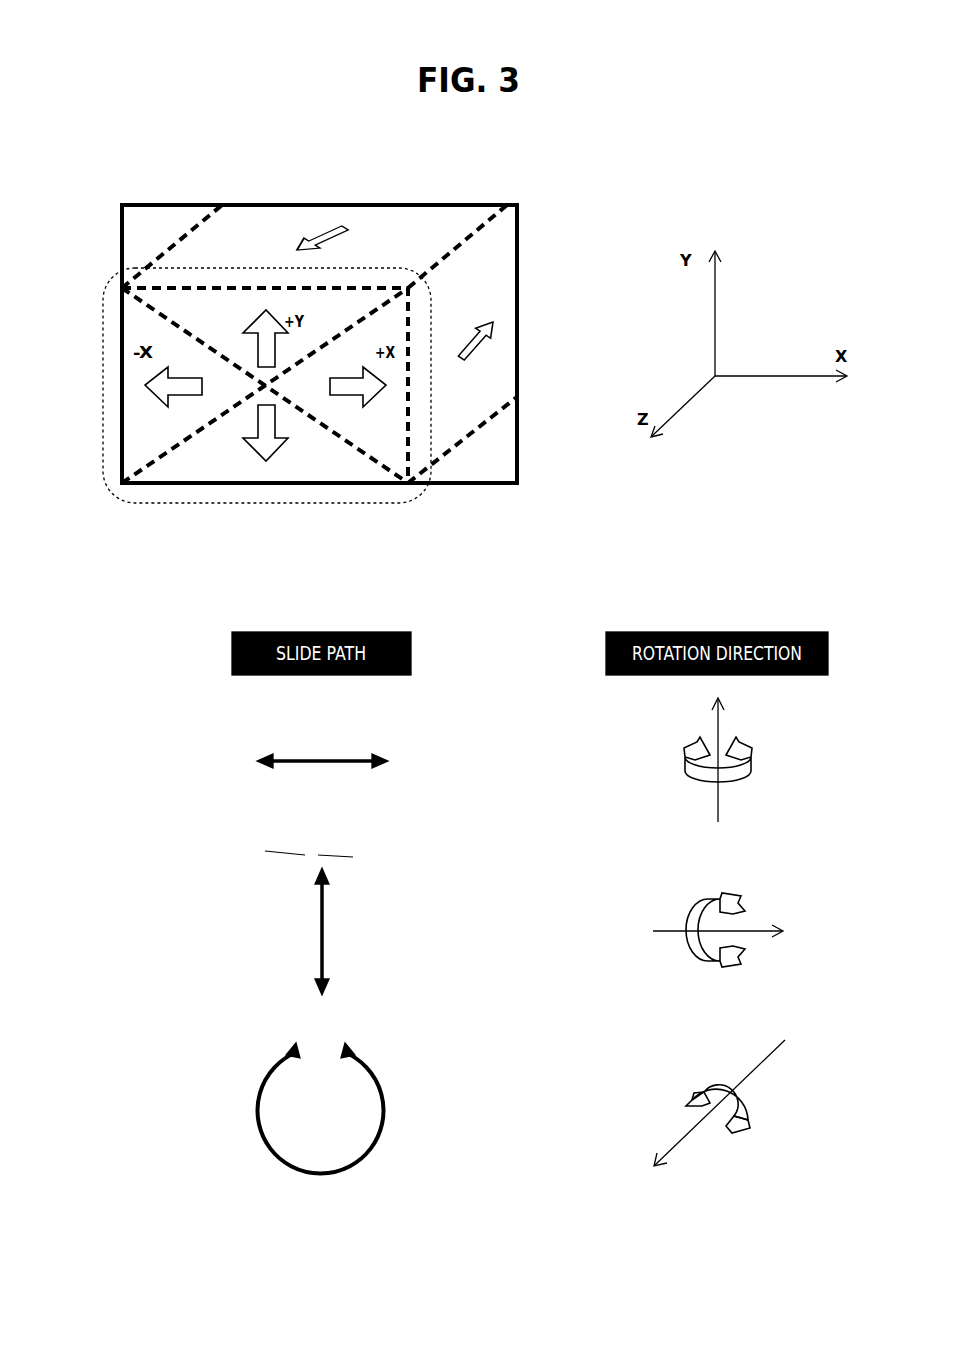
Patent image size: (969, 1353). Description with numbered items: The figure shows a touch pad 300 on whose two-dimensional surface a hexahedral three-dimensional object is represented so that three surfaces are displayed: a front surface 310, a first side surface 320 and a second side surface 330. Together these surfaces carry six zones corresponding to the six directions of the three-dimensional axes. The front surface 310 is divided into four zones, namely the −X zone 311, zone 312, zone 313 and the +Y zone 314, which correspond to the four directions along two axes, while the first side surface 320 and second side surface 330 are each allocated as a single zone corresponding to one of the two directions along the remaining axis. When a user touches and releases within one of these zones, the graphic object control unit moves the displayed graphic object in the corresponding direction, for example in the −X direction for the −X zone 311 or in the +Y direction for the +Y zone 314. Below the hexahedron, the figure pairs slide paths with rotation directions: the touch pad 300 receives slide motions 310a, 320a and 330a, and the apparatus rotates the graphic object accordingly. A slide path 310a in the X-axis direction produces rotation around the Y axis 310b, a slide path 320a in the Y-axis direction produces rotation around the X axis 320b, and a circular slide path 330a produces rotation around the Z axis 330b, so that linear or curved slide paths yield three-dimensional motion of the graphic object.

The touch pad 300 is at (542, 136).
The front surface 310 is at (146, 505).
The −X zone 311 is at (145, 428).
The zone 312 is at (385, 425).
The zone 313 is at (345, 460).
The +Y zone 314 is at (210, 315).
The first side surface 320 is at (495, 292).
The second side surface 330 is at (383, 226).
The slide path in X-axis direction 310a is at (236, 761).
The slide path in Y-axis direction 320a is at (236, 933).
The circular slide path 330a is at (236, 1103).
The rotation around Y axis 310b is at (807, 763).
The rotation around X axis 320b is at (807, 933).
The rotation around Z axis 330b is at (807, 1105).